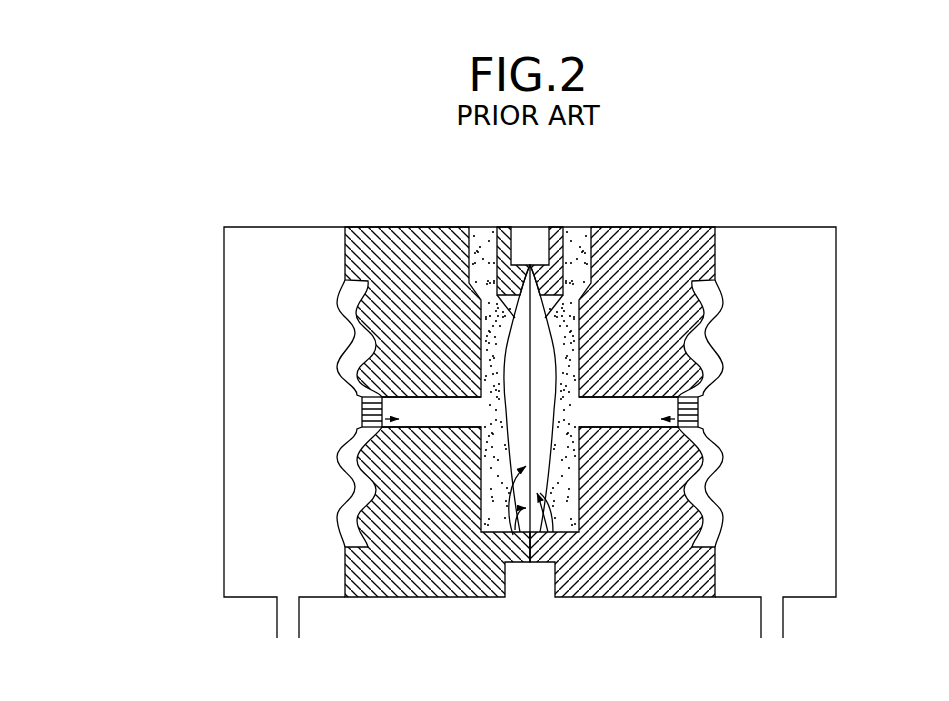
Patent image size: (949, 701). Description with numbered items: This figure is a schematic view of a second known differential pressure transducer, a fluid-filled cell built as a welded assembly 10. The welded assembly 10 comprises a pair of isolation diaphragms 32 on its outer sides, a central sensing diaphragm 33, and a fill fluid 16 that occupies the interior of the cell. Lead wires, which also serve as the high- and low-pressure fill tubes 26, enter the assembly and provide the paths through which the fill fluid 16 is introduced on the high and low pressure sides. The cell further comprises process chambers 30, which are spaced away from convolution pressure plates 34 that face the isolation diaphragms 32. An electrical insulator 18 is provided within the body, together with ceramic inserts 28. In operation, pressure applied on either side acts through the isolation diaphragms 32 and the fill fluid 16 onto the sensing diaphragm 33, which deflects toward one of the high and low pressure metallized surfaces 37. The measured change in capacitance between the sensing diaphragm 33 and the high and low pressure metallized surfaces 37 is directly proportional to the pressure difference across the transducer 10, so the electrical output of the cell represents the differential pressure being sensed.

The welded assembly 10 is at (158, 226).
The fill fluid 16 is at (358, 422).
The electrical insulator 18 is at (582, 296).
The high- and low-pressure fill tubes 26 is at (479, 226).
The ceramic inserts 28 is at (361, 397).
The process chambers 30 is at (240, 394).
The isolation diaphragms 32 is at (343, 347).
The sensing diaphragm 33 is at (513, 535).
The convolution pressure plates 34 is at (346, 444).
The high and low pressure metallized surfaces 37 is at (553, 532).